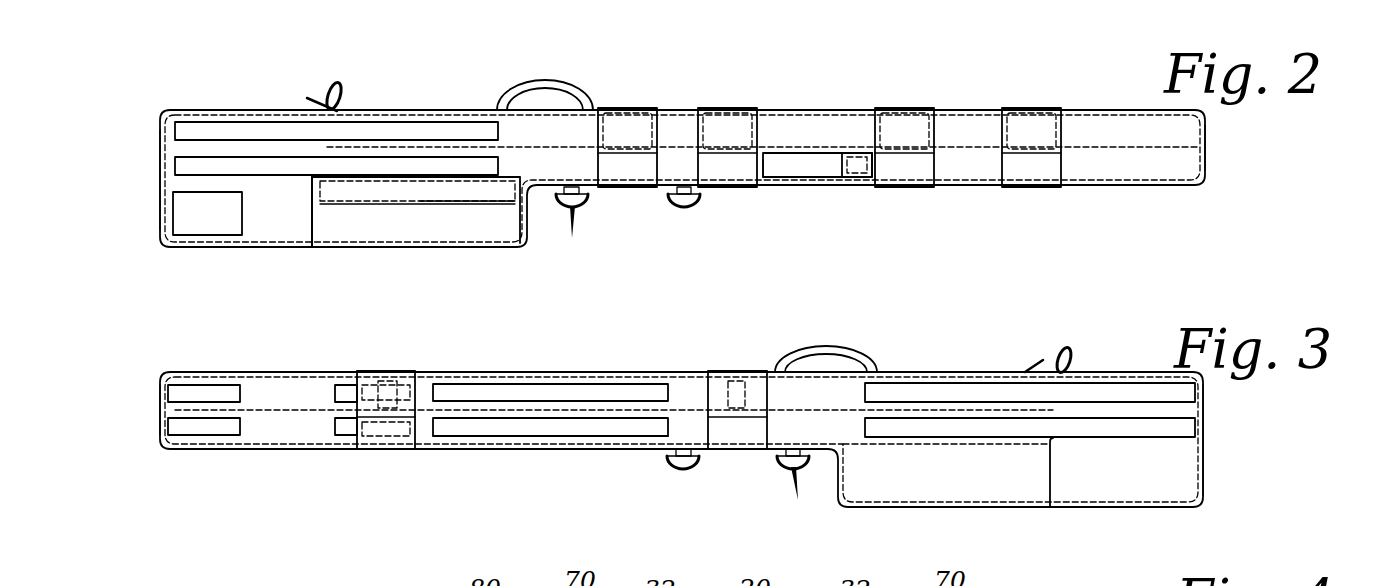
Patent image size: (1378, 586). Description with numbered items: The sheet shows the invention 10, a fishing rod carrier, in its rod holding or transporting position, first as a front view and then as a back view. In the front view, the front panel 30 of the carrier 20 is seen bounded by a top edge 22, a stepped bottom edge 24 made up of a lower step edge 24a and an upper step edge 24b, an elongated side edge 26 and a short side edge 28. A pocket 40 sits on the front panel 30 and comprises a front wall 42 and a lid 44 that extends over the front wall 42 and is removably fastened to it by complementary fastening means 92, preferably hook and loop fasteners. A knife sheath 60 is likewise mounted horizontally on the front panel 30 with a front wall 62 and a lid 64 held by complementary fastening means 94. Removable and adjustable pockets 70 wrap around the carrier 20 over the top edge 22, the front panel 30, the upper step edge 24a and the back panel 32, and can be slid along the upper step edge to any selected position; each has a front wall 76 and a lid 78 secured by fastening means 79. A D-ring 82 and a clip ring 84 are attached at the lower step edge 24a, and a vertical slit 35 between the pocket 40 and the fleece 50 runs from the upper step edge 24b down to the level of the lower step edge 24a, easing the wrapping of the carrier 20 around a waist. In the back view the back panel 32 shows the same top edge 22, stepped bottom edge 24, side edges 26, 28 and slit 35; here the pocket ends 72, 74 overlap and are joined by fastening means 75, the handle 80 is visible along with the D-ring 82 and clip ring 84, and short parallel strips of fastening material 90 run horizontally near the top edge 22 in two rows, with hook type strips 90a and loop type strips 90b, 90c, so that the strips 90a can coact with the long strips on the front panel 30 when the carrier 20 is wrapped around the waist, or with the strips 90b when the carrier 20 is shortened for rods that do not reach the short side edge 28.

In FIG. 2, the invention 10 is at (383, 73).
In FIG. 3, the invention 10 is at (608, 356).
In FIG. 2, the carrier 20 is at (793, 92).
In FIG. 3, the carrier 20 is at (960, 352).
In FIG. 2, the top edge 22 is at (787, 108).
In FIG. 3, the top edge 22 is at (1137, 372).
In FIG. 2, the stepped bottom edge 24 is at (506, 262).
In FIG. 3, the stepped bottom edge 24 is at (533, 476).
In FIG. 2, the lower step edge 24a is at (1112, 188).
In FIG. 3, the lower step edge 24a is at (280, 452).
In FIG. 2, the upper step edge 24b is at (238, 248).
In FIG. 3, the upper step edge 24b is at (1080, 507).
In FIG. 2, the elongated side edge 26 is at (158, 158).
In FIG. 3, the elongated side edge 26 is at (1208, 455).
In FIG. 2, the short side edge 28 is at (1210, 138).
In FIG. 3, the short side edge 28 is at (160, 412).
In FIG. 2, the front panel 30 is at (523, 178).
In FIG. 3, the back panel 32 is at (947, 480).
In FIG. 2, the vertical slit 35 is at (310, 205).
In FIG. 3, the vertical slit 35 is at (1047, 470).
In FIG. 2, the pocket 40 is at (406, 229).
In FIG. 2, the front wall 42 is at (452, 222).
In FIG. 2, the lid 44 is at (348, 207).
In FIG. 2, the fleece 50 is at (200, 212).
In FIG. 2, the knife sheath 60 is at (831, 159).
In FIG. 2, the front wall 62 is at (775, 167).
In FIG. 2, the lid 64 is at (855, 175).
In FIG. 2, the removable and adjustable pockets 70 is at (829, 160).
In FIG. 3, the removable and adjustable pockets 70 is at (556, 433).
In FIG. 3, the pocket end 72 is at (402, 378).
In FIG. 3, the pocket end 74 is at (405, 442).
In FIG. 3, the fastening means 75 is at (390, 385).
In FIG. 2, the front wall 76 is at (647, 165).
In FIG. 2, the lid 78 is at (603, 128).
In FIG. 2, the fastening means 79 is at (632, 140).
In FIG. 2, the handle 80 is at (547, 85).
In FIG. 3, the handle 80 is at (830, 345).
In FIG. 2, the D-ring 82 is at (686, 206).
In FIG. 3, the D-ring 82 is at (680, 470).
In FIG. 2, the clip ring 84 is at (577, 218).
In FIG. 3, the clip ring 84 is at (795, 490).
In FIG. 2, the strips of fastening material 90 is at (257, 130).
In FIG. 3, the strips of fastening material 90 is at (503, 393).
In FIG. 3, the strips 90a is at (228, 393).
In FIG. 3, the strips 90b is at (340, 393).
In FIG. 3, the strips 90c is at (590, 428).
In FIG. 2, the fastening means 92 is at (495, 197).
In FIG. 2, the fastening means 94 is at (858, 160).